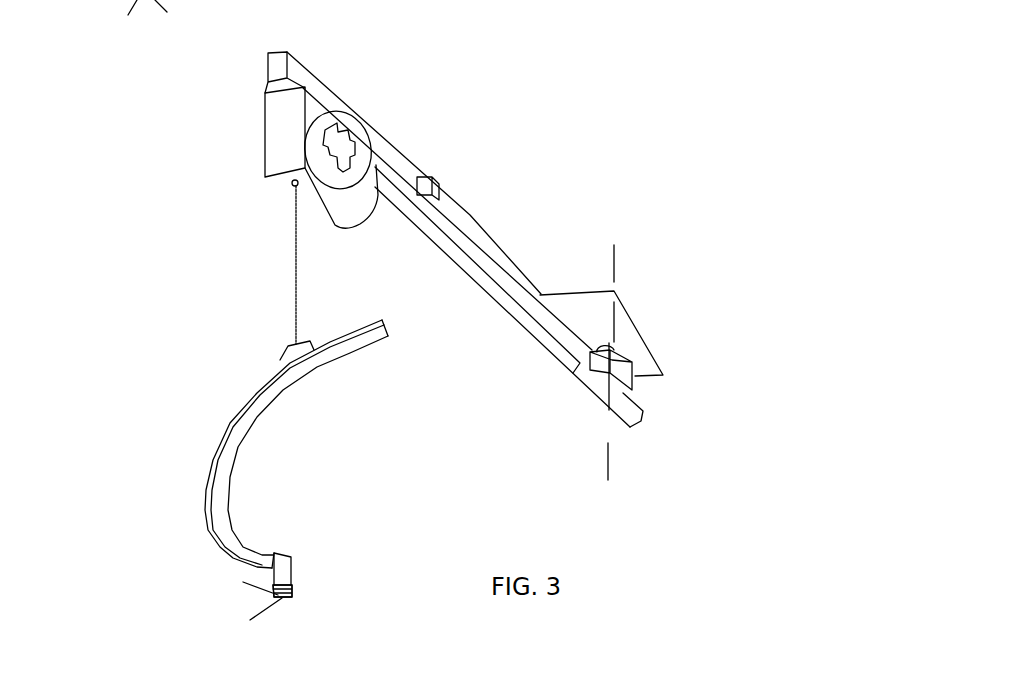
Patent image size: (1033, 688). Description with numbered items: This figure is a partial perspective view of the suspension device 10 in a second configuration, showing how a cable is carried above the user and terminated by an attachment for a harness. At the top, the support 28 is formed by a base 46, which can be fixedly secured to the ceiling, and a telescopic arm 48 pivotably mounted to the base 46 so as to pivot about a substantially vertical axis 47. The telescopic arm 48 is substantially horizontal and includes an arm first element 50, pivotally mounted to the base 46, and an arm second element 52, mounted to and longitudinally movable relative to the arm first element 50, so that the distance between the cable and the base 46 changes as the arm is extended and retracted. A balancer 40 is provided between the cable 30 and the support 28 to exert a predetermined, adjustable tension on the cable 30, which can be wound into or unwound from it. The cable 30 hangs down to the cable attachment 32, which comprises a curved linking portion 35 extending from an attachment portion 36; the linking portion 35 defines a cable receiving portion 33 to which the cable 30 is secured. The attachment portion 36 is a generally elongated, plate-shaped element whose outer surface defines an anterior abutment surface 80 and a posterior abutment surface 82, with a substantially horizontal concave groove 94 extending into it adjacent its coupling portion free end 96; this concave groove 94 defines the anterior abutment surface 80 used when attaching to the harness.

The suspension device 10 is at (732, 108).
The support 28 is at (463, 88).
The cable 30 is at (298, 289).
The cable attachment 32 is at (332, 480).
The cable receiving portion 33 is at (295, 352).
The linking portion 35 is at (275, 388).
The attachment portion 36 is at (274, 597).
The balancer 40 is at (287, 112).
The base 46 is at (587, 322).
The vertical axis 47 is at (608, 460).
The telescopic arm 48 is at (343, 97).
The arm first element 50 is at (447, 193).
The arm second element 52 is at (433, 232).
The anterior abutment surface 80 is at (292, 585).
The posterior abutment surface 82 is at (270, 563).
The concave groove 94 is at (282, 591).
The coupling portion free end 96 is at (290, 597).